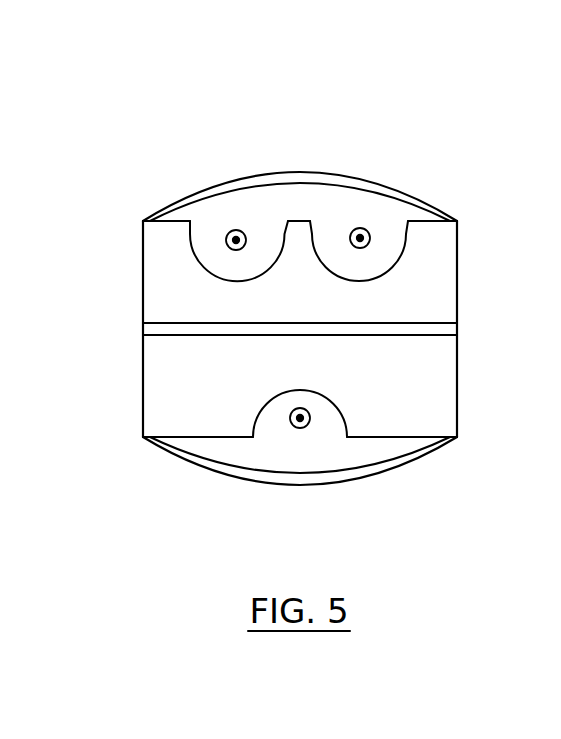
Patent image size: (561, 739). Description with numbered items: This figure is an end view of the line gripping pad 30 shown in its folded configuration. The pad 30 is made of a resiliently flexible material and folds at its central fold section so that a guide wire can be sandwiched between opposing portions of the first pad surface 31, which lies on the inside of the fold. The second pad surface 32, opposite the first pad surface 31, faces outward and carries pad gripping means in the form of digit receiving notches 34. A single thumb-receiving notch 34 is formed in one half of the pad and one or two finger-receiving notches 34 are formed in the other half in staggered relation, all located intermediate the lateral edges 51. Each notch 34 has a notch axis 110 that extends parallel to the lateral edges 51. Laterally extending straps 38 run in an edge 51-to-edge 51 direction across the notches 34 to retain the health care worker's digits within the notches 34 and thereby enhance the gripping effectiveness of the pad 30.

The line gripping pad 30 is at (361, 100).
The first pad surface 31 is at (143, 329).
The second pad surface 32 is at (243, 160).
The digit receiving notch 34 is at (332, 264).
The laterally extending strap 38 is at (366, 228).
The lateral edge 51 is at (140, 270).
The notch axis 110 is at (236, 229).